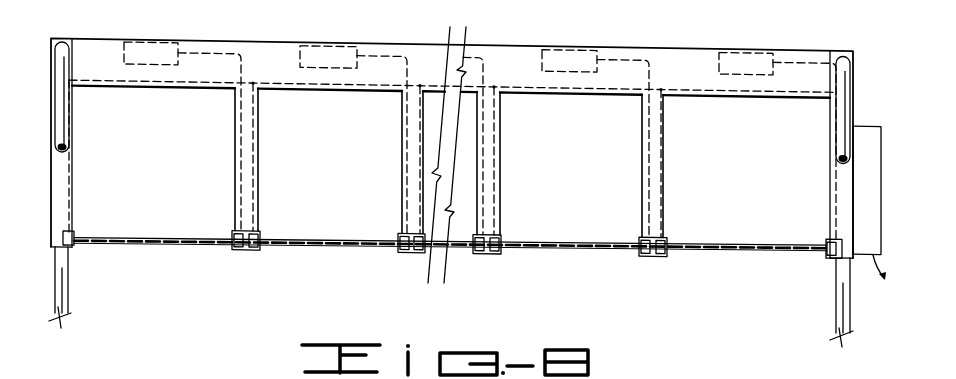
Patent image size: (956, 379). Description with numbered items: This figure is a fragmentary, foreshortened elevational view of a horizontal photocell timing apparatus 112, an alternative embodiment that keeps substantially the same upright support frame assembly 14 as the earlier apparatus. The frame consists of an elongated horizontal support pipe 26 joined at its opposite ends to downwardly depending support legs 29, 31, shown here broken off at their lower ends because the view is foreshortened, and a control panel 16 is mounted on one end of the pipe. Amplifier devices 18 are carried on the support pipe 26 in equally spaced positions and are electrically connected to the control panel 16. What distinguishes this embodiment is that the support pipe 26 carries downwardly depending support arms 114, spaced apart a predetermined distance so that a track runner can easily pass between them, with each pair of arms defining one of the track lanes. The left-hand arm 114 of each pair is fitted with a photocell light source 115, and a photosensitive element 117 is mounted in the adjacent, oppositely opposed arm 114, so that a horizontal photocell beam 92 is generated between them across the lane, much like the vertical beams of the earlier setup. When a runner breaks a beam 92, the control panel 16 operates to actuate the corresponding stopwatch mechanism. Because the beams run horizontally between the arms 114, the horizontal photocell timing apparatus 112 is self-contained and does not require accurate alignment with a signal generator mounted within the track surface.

The horizontal photocell timing apparatus 112 is at (504, 36).
The support frame assembly 14 is at (106, 46).
The amplifier device 18 is at (322, 45).
The support pipe 26 is at (850, 58).
The control panel 16 is at (862, 182).
The support arm 114 is at (247, 163).
The photosensitive element 117 is at (397, 249).
The photocell light source 115 is at (260, 235).
The photocell beam 92 is at (137, 234).
The support leg 29 is at (62, 281).
The support leg 31 is at (838, 275).